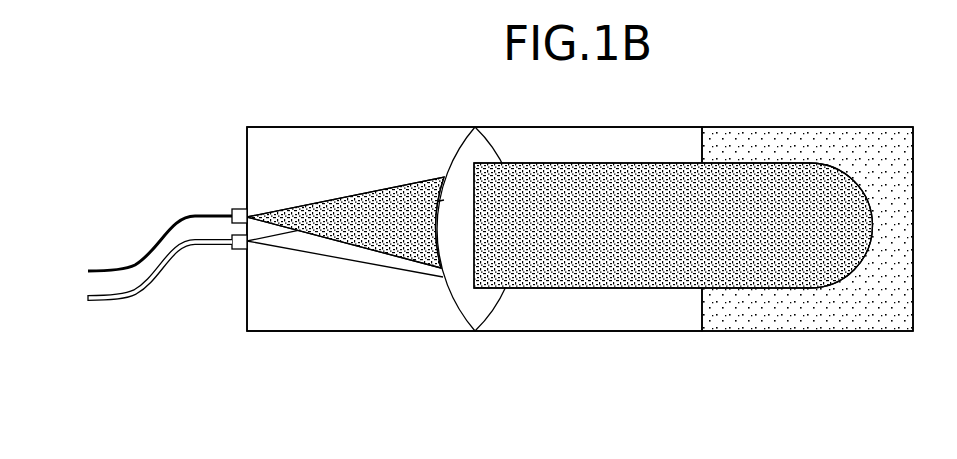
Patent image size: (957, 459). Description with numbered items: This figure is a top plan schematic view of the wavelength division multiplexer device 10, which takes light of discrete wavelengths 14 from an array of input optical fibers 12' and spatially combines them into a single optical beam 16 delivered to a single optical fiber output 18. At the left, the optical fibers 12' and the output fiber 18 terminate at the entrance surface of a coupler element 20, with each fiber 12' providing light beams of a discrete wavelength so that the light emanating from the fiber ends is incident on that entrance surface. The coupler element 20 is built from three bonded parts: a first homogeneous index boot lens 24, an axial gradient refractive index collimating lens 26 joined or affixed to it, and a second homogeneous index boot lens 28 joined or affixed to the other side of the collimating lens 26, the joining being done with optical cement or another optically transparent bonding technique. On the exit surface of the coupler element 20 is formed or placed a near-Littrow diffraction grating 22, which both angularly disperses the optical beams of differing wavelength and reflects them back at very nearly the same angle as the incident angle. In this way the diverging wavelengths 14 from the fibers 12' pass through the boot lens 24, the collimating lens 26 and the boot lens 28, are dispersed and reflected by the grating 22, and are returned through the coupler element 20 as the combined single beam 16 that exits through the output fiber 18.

The device 10 is at (249, 352).
The optical fiber 12' is at (167, 215).
The discrete wavelengths of light 14 is at (318, 202).
The single optical beam 16 is at (300, 239).
The single optical fiber output 18 is at (167, 274).
The coupler element 20 is at (462, 355).
The near-Littrow diffraction grating 22 is at (883, 320).
The first homogeneous index boot lens 24 is at (357, 303).
The axial gradient refractive index collimating lens 26 is at (478, 303).
The second homogeneous index boot lens 28 is at (597, 312).